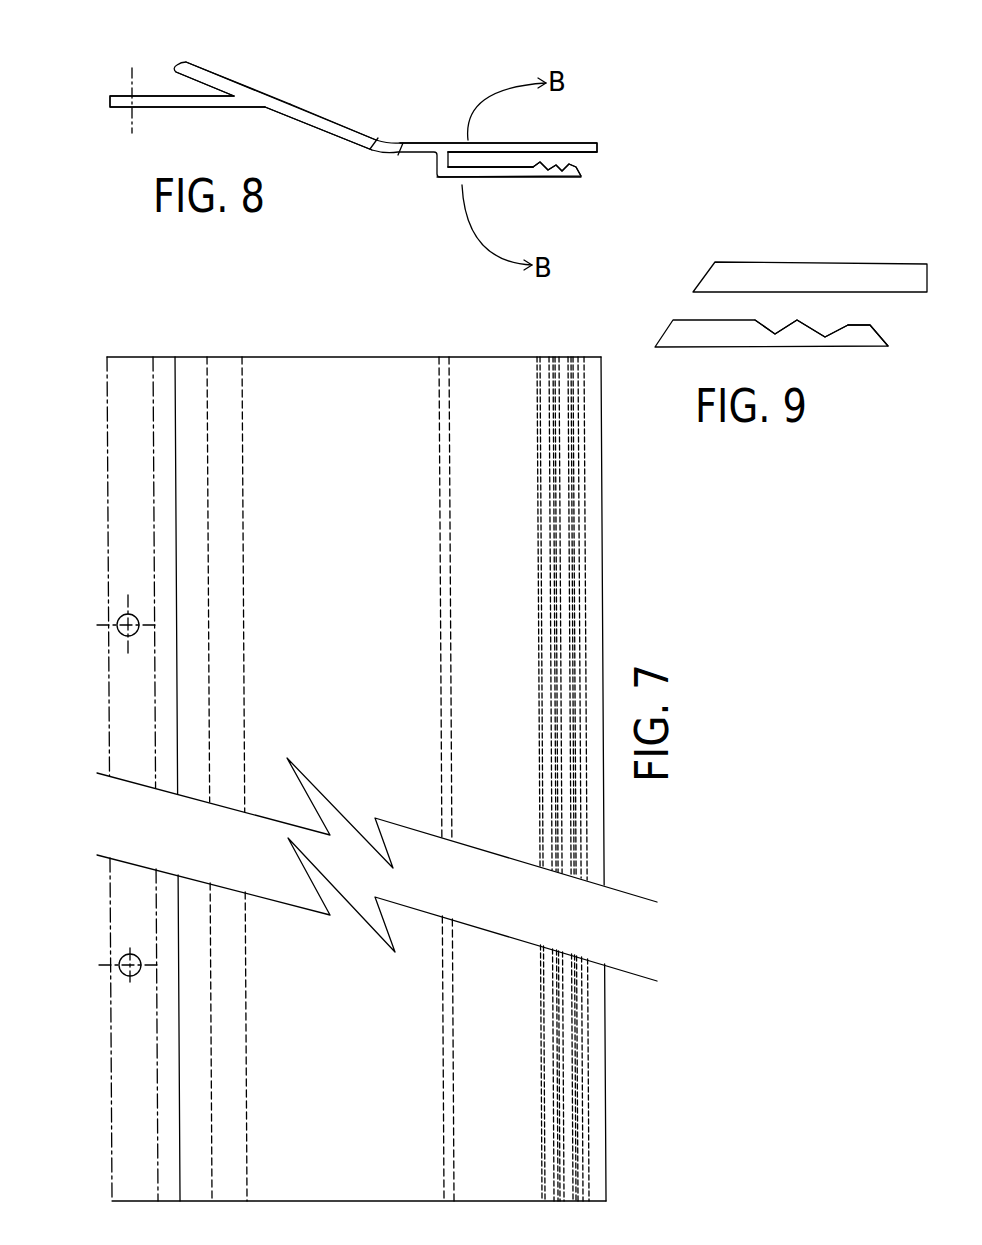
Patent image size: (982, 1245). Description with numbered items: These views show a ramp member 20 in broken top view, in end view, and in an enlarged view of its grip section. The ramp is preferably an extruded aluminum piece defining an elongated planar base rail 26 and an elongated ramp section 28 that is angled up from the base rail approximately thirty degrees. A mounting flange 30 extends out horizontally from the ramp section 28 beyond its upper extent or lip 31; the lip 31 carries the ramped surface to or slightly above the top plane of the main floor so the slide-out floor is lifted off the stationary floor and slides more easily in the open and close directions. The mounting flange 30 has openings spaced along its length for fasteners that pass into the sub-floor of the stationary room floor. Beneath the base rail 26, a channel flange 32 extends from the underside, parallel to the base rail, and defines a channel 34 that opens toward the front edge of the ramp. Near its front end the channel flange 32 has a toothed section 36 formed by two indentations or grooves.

In FIG. 8, the clip assembly 20 is at (376, 116).
In FIG. 7, the clip assembly 20 is at (93, 530).
In FIG. 8, the base rail 26 is at (502, 150).
In FIG. 9, the base rail 26 is at (777, 267).
In FIG. 7, the base rail 26 is at (515, 673).
In FIG. 8, the ramp section 28 is at (320, 108).
In FIG. 7, the ramp section 28 is at (343, 1047).
In FIG. 8, the mounting flange 30 is at (165, 108).
In FIG. 7, the mounting flange 30 is at (144, 908).
In FIG. 8, the lip 31 is at (203, 67).
In FIG. 8, the channel flange 32 is at (495, 175).
In FIG. 9, the channel flange 32 is at (702, 342).
In FIG. 8, the channel 34 is at (588, 168).
In FIG. 9, the channel 34 is at (870, 309).
In FIG. 8, the toothed section 36 is at (558, 172).
In FIG. 9, the toothed section 36 is at (781, 321).